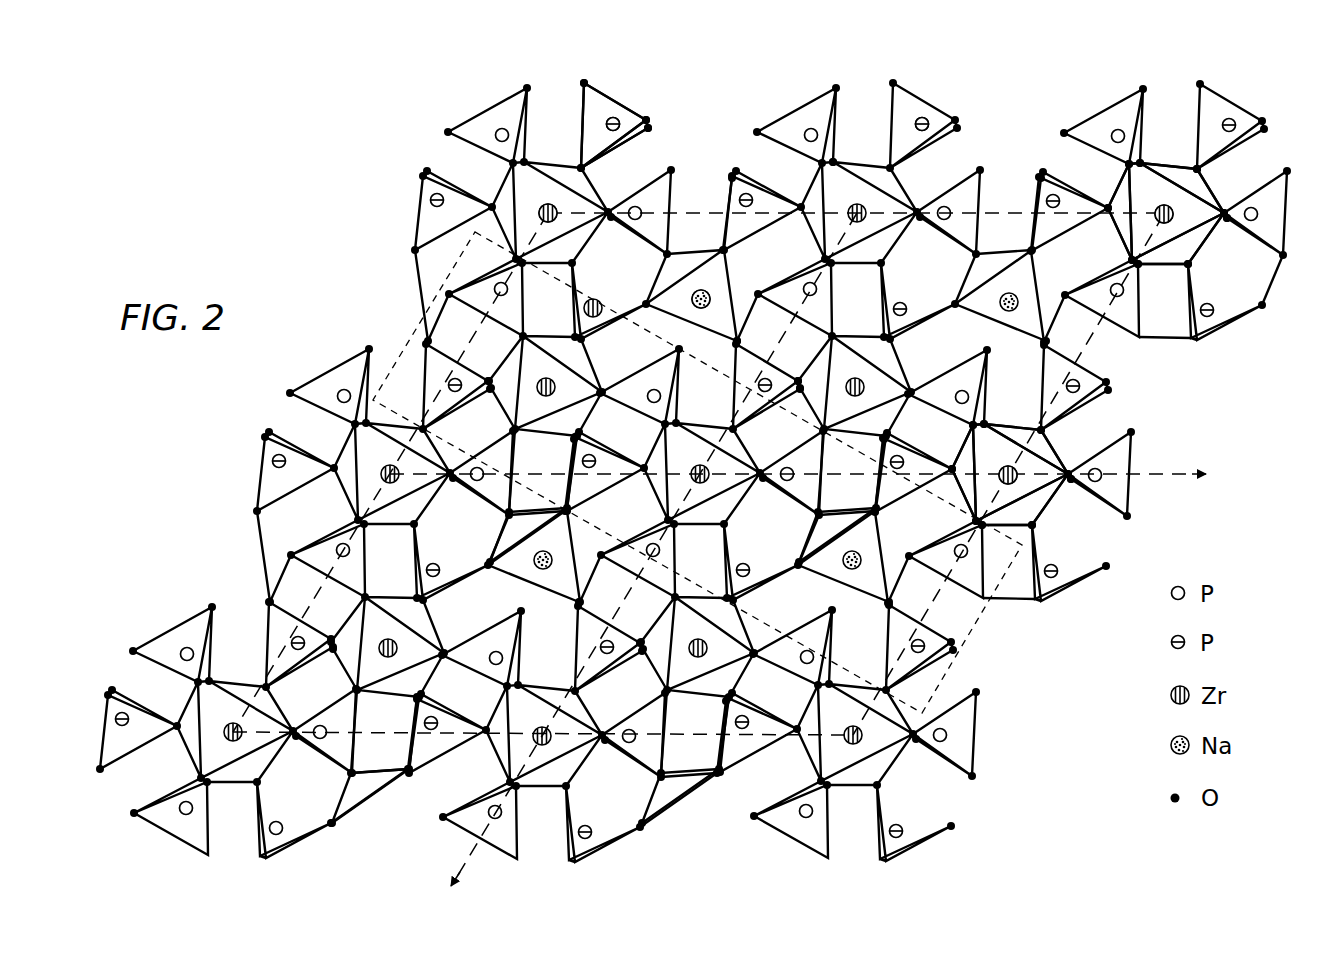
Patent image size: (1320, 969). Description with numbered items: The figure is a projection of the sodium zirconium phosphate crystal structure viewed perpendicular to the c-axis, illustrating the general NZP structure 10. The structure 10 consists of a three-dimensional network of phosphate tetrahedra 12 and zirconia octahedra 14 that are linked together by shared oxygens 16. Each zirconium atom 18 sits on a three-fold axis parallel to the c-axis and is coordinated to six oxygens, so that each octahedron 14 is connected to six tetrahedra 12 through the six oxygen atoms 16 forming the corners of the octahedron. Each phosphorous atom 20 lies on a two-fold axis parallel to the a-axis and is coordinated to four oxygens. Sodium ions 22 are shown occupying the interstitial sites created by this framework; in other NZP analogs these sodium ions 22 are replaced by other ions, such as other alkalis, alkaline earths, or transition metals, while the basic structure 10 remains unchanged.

The structure 10 is at (392, 228).
The PO4 tetrahedra 12 is at (642, 94).
The ZrO6 octahedra 14 is at (1166, 163).
The shared oxygens 16 is at (584, 168).
The zirconium atom 18 is at (547, 204).
The phosphorous atom 20 is at (928, 122).
The sodium ions 22 is at (701, 290).